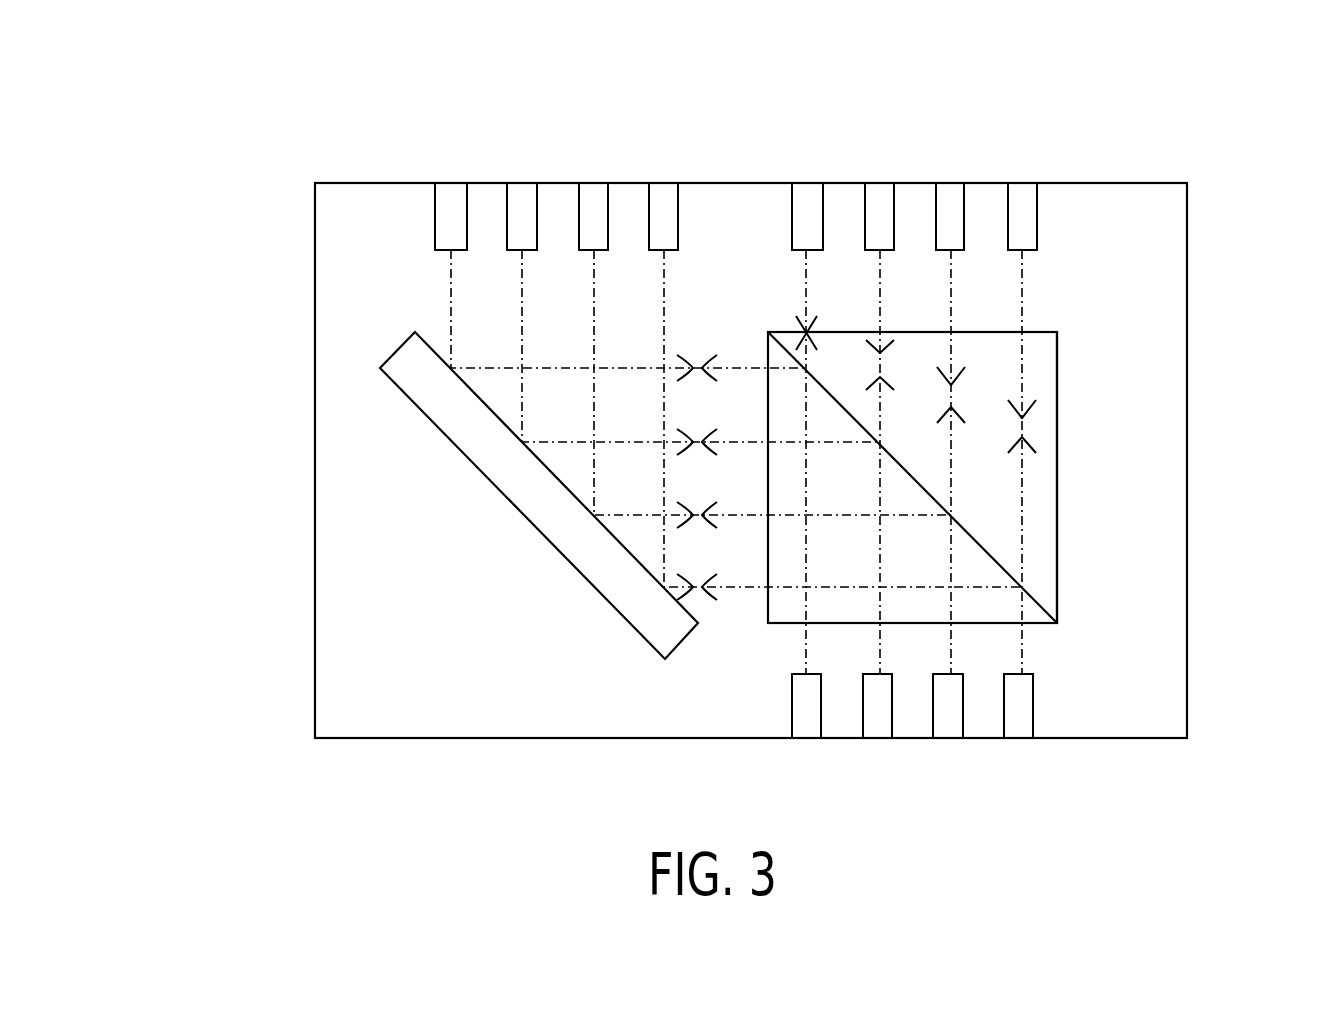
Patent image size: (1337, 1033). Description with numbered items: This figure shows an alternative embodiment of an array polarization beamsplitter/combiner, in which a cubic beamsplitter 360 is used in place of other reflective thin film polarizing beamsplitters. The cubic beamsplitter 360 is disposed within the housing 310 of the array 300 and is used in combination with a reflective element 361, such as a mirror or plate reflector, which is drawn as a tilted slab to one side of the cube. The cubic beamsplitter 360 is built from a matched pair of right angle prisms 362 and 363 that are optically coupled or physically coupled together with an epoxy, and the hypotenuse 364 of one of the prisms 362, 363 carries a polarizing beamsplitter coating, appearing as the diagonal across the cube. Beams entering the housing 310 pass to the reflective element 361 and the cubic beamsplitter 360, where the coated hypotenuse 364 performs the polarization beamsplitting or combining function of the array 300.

The array 300 is at (268, 139).
The housing 310 is at (313, 632).
The cubic beamsplitter 360 is at (1068, 441).
The reflective element 361 is at (510, 503).
The right angle prism 362 is at (1041, 582).
The right angle prism 363 is at (1030, 625).
The hypotenuse 364 is at (1037, 612).